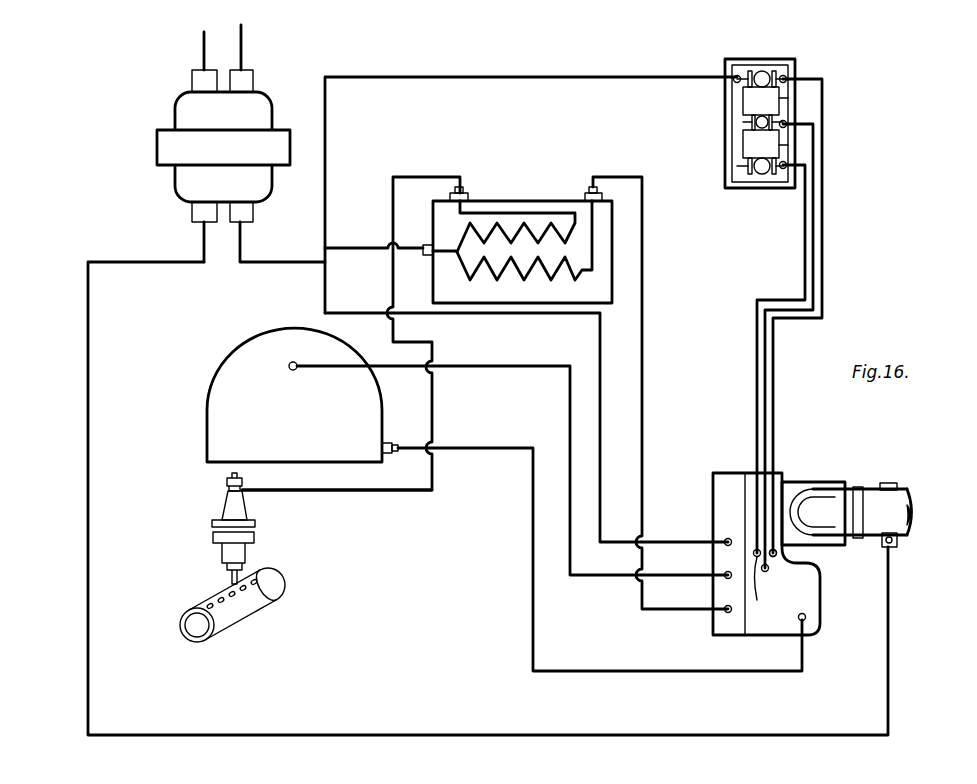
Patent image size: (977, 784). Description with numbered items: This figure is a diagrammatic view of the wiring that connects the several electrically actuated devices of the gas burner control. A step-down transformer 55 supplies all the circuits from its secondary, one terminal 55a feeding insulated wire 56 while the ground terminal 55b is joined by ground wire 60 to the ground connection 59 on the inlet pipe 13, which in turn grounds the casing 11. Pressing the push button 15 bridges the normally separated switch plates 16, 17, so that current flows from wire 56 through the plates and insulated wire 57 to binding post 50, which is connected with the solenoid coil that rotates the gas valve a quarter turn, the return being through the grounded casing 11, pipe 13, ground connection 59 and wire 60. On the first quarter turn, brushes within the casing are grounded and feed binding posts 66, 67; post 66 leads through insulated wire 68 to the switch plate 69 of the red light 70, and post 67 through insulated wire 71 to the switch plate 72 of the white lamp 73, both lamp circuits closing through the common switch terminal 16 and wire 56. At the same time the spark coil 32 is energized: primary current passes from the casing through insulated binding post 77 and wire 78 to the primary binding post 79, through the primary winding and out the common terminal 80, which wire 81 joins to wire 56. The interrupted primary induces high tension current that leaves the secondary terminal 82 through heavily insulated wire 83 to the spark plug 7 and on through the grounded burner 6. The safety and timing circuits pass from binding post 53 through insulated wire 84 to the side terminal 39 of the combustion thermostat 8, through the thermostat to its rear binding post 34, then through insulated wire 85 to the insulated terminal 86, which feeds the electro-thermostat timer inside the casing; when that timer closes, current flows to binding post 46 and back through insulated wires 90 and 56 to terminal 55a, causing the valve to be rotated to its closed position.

The burner 6 is at (255, 602).
The spark plug 7 is at (236, 503).
The thermostat 8 is at (220, 394).
The casing 11 is at (720, 482).
The inlet pipe 13 is at (870, 490).
The push button 15 is at (752, 116).
The switch plate 16 is at (748, 128).
The switch plate 17 is at (775, 118).
The spark coil 32 is at (520, 255).
The binding post 34 is at (297, 362).
The binding post 39 is at (392, 444).
The binding post 46 is at (724, 540).
The binding post 50 is at (770, 568).
The binding post 53 is at (806, 617).
The step-down transformer 55 is at (183, 174).
The terminal of the secondary 55a is at (248, 214).
The ground terminal 55b is at (200, 214).
The insulated wire 56 is at (326, 170).
The insulated wire 57 is at (823, 228).
The ground connection 59 is at (897, 540).
The ground wire 60 is at (88, 562).
The binding post 66 is at (766, 590).
The binding post 67 is at (778, 553).
The insulated wire 68 is at (757, 390).
The switch plate 69 is at (786, 180).
The red light 70 is at (758, 174).
The insulated wire 71 is at (774, 424).
The switch plate 72 is at (785, 72).
The white lamp 73 is at (757, 70).
The binding post 77 is at (725, 613).
The wire 78 is at (645, 320).
The primary binding post 79 is at (590, 186).
The common terminal 80 is at (428, 257).
The wire 81 is at (345, 246).
The secondary terminal 82 is at (462, 188).
The heavily insulated wire 83 is at (410, 177).
The insulated wire 84 is at (650, 671).
The insulated wire 85 is at (500, 366).
The insulated terminal 86 is at (724, 574).
The insulated wire 90 is at (322, 290).